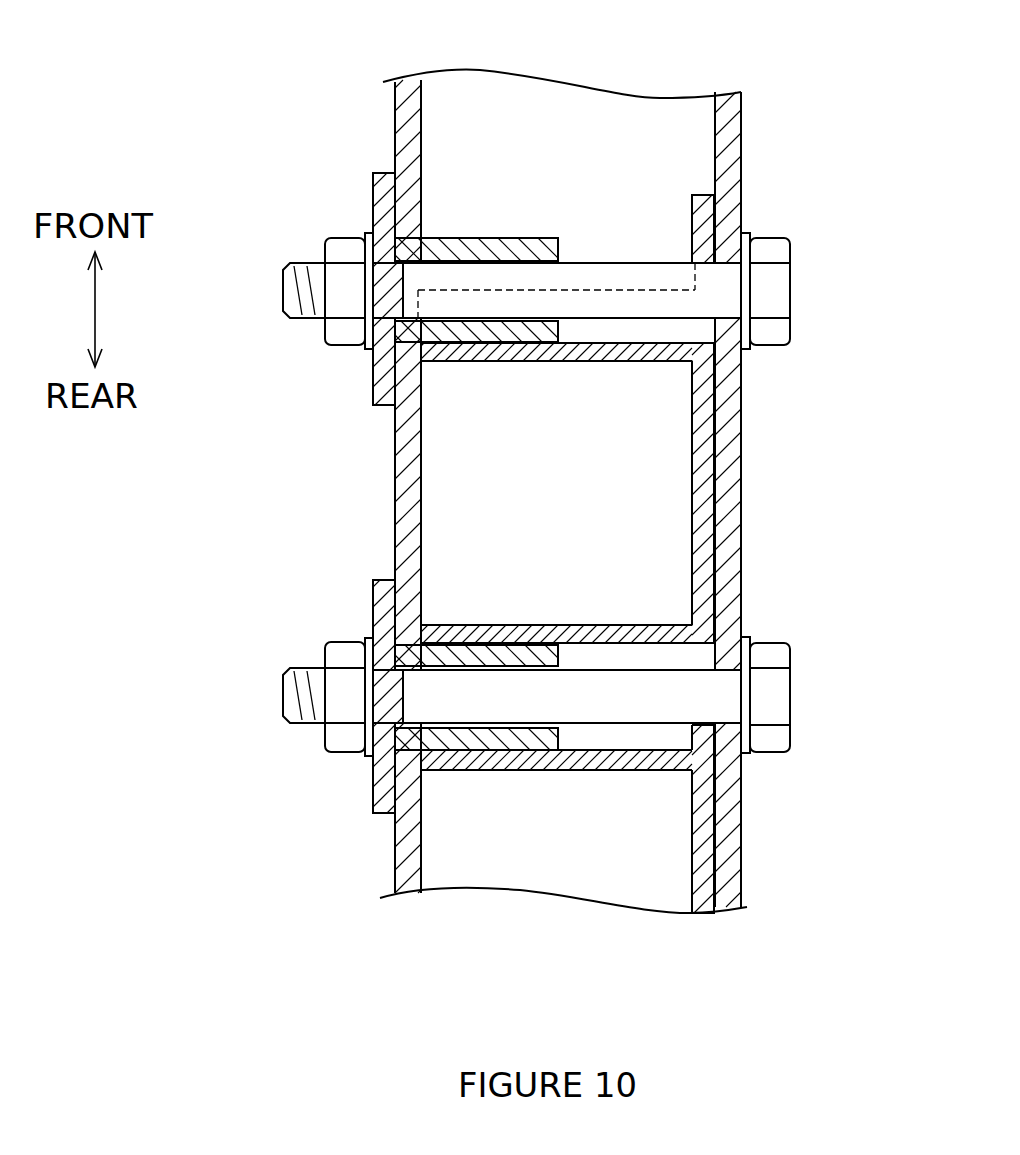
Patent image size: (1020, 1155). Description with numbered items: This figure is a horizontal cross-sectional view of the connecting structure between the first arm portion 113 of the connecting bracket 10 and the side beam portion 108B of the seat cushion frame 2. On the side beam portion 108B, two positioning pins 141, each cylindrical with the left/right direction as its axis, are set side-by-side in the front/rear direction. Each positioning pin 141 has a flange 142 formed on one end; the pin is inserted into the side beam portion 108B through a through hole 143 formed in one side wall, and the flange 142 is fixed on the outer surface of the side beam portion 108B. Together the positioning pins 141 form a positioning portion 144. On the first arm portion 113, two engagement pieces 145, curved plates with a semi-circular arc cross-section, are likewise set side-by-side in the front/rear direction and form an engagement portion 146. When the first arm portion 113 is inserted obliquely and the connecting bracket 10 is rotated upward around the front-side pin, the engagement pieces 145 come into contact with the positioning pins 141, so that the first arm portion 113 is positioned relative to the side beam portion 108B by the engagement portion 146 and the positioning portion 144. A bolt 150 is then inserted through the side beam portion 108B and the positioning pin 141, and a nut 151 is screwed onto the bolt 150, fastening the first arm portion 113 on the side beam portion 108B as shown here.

The seat cushion frame 2 is at (741, 158).
The connecting bracket 10 is at (692, 862).
The side beam portion 108B is at (741, 103).
The first arm portion 113 is at (702, 893).
The positioning pin 141 is at (540, 238).
The flange 142 is at (373, 178).
The through hole 143 is at (403, 237).
The positioning portion 144 is at (495, 238).
The engagement piece 145 is at (580, 363).
The engagement portion 146 is at (512, 363).
The bolt 150 is at (790, 293).
The nut 151 is at (326, 240).